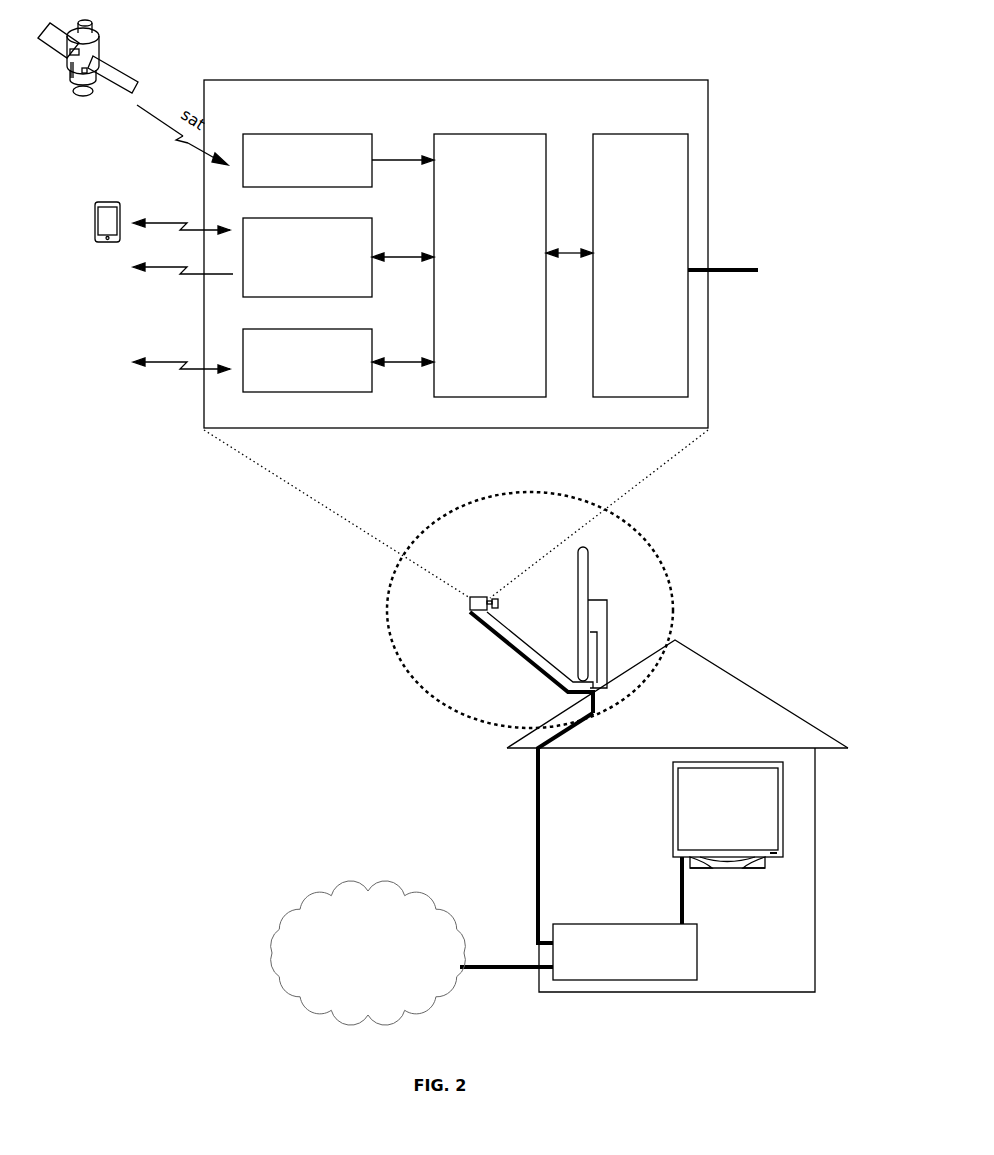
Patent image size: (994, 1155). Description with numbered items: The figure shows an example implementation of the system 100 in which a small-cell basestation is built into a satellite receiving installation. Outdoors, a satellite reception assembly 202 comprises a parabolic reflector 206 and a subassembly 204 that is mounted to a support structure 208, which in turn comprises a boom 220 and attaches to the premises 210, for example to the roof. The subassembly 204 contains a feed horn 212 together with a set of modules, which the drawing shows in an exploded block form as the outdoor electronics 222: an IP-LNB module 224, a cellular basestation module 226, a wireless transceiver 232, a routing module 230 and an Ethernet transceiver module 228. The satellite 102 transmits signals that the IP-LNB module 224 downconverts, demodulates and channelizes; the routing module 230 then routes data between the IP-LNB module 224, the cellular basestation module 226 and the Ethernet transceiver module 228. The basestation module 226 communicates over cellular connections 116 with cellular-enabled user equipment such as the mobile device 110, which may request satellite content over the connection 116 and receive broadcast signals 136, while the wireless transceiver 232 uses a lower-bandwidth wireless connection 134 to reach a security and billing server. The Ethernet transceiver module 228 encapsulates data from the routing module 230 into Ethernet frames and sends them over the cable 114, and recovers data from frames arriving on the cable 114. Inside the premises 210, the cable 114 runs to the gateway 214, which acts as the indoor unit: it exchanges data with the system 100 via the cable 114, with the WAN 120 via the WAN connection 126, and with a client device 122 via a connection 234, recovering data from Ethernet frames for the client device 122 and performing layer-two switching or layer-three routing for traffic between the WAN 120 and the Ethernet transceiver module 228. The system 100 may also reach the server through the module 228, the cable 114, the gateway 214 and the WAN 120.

The satellite 102 is at (101, 40).
The mobile device 110 is at (106, 244).
The cellular connection 116 is at (175, 221).
The broadcast signals 136 is at (175, 265).
The wireless connection 134 is at (175, 360).
The outdoor unit electronics 222 is at (456, 254).
The IP-LNB module 224 is at (307, 160).
The cellular basestation module 226 is at (307, 257).
The wireless transceiver 232 is at (307, 360).
The routing module 230 is at (490, 265).
The Ethernet transceiver module 228 is at (640, 265).
The cable 114 is at (733, 268).
The system 100 is at (668, 572).
The satellite reception assembly 202 is at (503, 561).
The subassembly 204 is at (469, 609).
The feed horn 212 is at (502, 604).
The parabolic reflector 206 is at (588, 576).
The support structure 208 is at (607, 636).
The boom 220 is at (528, 648).
The premises 210 is at (765, 695).
The client device 122 is at (672, 808).
The connection 234 is at (679, 891).
The gateway 214 is at (625, 952).
The WAN connection 126 is at (479, 966).
The WAN 120 is at (368, 953).